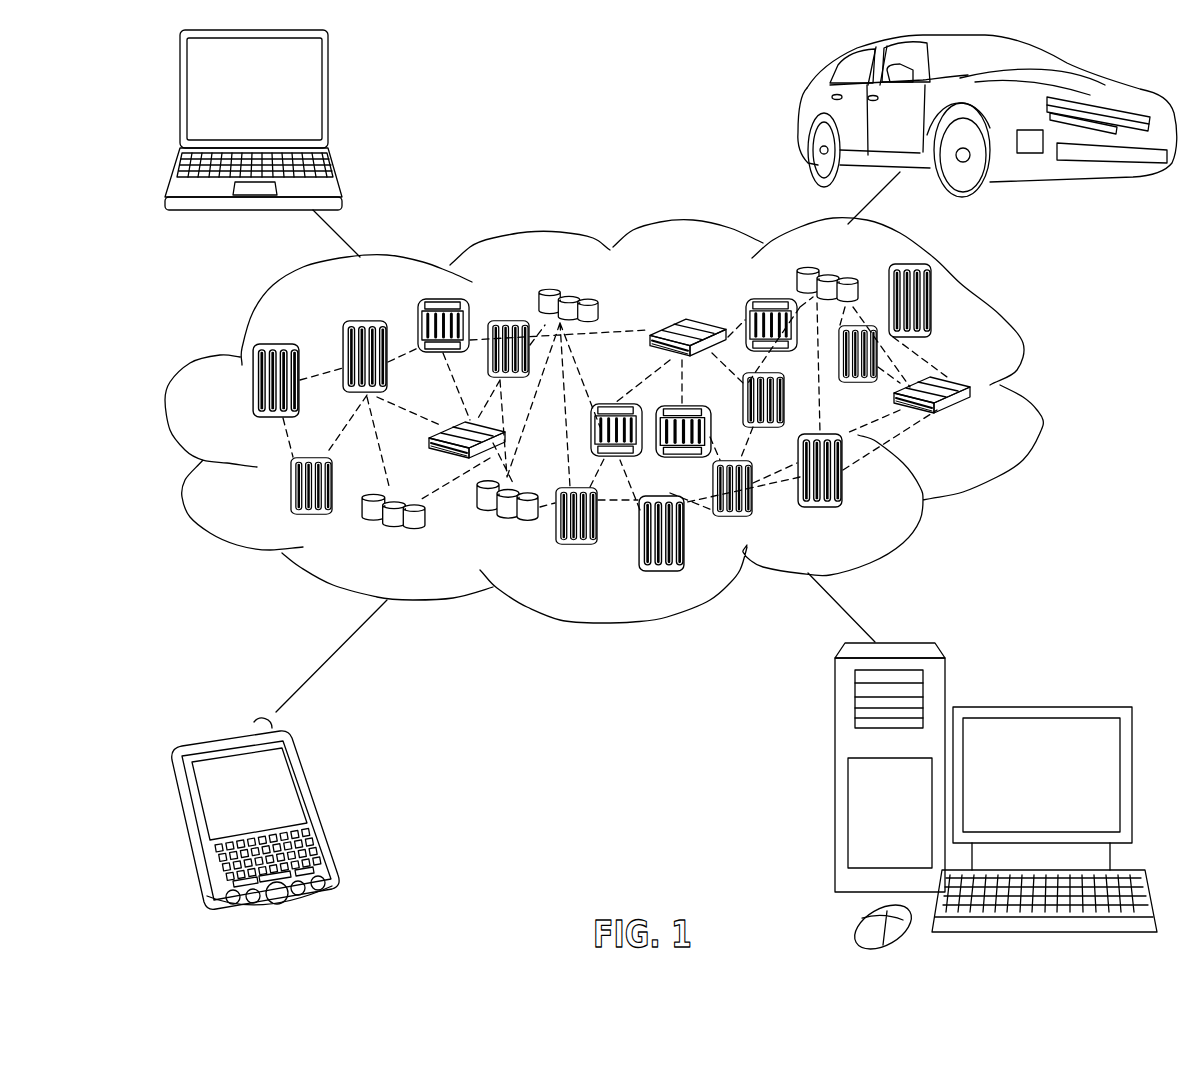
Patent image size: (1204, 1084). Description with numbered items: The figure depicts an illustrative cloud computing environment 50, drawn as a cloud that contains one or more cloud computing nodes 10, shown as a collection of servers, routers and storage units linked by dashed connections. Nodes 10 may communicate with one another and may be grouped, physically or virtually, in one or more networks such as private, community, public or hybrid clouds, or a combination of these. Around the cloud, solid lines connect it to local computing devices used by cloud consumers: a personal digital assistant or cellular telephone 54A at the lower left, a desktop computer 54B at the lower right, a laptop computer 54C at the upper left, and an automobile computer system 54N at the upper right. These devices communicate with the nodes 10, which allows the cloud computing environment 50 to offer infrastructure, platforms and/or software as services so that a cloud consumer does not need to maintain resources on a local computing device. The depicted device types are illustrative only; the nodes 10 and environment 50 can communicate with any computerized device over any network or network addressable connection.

The cloud computing nodes 10 is at (982, 426).
The cloud computing environment 50 is at (1037, 392).
The personal digital assistant (PDA) or cellular telephone 54A is at (317, 808).
The desktop computer 54B is at (1037, 706).
The laptop computer 54C is at (330, 98).
The automobile computer system 54N is at (803, 118).